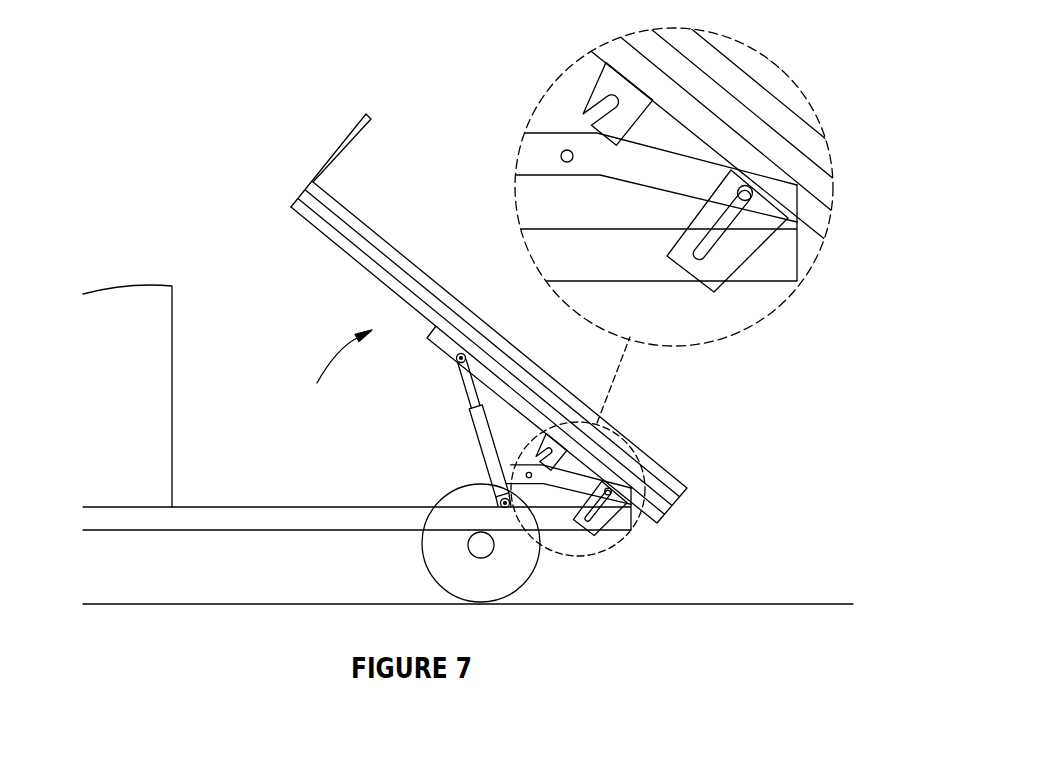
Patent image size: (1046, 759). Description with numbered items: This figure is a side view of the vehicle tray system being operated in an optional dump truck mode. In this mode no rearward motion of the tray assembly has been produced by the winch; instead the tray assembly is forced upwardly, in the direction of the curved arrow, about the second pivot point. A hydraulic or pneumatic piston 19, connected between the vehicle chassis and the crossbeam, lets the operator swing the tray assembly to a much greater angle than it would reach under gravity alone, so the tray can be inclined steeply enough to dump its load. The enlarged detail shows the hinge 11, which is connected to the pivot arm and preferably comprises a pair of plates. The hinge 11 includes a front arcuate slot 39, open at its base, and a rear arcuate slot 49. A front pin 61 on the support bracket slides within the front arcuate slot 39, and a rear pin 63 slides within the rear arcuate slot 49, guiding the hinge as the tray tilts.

The hinge 11 is at (608, 85).
The hydraulic or pneumatic piston 19 is at (477, 431).
The front arcuate slot 39 is at (603, 113).
The rear arcuate slot 49 is at (731, 222).
The front pin 61 is at (560, 156).
The rear pin 63 is at (750, 192).